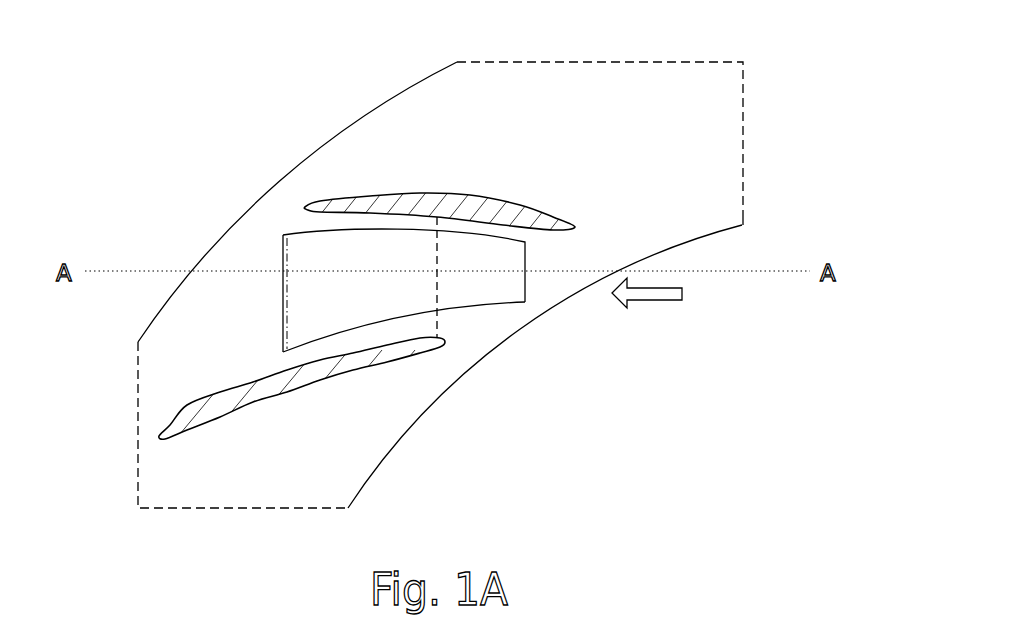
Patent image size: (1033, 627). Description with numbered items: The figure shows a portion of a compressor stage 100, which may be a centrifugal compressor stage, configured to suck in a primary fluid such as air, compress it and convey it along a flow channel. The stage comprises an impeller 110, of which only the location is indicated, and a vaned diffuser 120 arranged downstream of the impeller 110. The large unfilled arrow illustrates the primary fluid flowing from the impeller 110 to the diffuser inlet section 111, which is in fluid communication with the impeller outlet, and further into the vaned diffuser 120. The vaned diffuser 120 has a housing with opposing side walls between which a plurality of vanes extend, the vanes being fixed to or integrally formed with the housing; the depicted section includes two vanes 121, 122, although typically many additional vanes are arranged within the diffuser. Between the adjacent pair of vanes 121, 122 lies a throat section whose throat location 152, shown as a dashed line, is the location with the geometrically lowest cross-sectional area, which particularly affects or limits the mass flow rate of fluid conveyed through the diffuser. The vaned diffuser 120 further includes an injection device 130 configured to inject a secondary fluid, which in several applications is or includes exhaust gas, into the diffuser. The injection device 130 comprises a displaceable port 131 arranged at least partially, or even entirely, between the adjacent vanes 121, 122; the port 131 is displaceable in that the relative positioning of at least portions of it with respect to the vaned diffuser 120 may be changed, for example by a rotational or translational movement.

The compressor stage 100 is at (233, 172).
The impeller 110 is at (717, 318).
The diffuser inlet section 111 is at (593, 293).
The vaned diffuser 120 is at (673, 82).
The vane 121 is at (371, 372).
The vane 122 is at (552, 201).
The injection device 130 is at (490, 310).
The displaceable port 131 is at (457, 310).
The throat location 152 is at (437, 217).